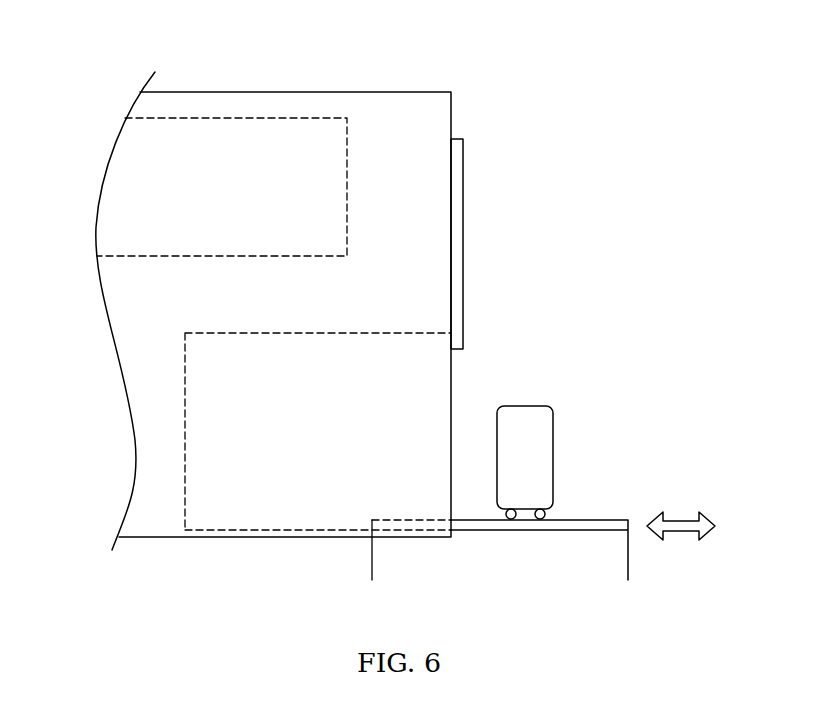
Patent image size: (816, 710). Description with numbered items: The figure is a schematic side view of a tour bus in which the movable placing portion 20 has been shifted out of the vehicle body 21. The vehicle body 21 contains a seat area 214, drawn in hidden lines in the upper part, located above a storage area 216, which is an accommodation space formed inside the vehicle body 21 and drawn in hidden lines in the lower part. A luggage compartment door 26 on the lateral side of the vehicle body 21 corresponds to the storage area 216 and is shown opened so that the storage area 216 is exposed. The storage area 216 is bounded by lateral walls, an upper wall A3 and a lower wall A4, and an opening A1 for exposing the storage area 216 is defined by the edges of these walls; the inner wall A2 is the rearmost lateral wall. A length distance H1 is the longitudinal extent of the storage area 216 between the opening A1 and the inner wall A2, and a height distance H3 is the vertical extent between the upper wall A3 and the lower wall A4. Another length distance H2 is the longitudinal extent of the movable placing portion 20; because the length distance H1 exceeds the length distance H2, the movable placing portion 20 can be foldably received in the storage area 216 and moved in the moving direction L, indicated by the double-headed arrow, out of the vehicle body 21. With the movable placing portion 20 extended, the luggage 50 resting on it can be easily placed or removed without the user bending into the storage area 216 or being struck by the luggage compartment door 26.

The vehicle body 21 is at (313, 92).
The seat area 214 is at (176, 147).
The luggage compartment door 26 is at (455, 230).
The storage area 216 is at (332, 352).
The upper wall A3 is at (390, 333).
The opening A1 is at (453, 383).
The luggage 50 is at (532, 413).
The movable placing portion 20 is at (593, 520).
The inner wall A2 is at (186, 487).
The lower wall A4 is at (250, 530).
The length distance H1 is at (451, 395).
The length distance H2 is at (628, 575).
The height distance H3 is at (185, 530).
The moving direction L is at (682, 528).